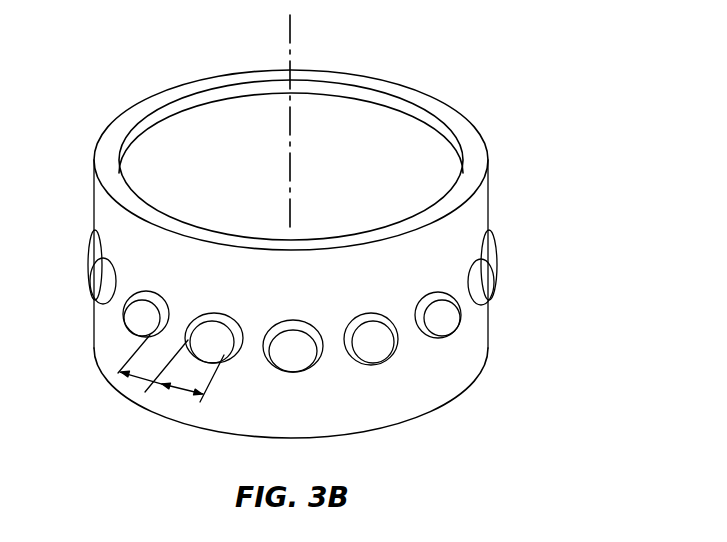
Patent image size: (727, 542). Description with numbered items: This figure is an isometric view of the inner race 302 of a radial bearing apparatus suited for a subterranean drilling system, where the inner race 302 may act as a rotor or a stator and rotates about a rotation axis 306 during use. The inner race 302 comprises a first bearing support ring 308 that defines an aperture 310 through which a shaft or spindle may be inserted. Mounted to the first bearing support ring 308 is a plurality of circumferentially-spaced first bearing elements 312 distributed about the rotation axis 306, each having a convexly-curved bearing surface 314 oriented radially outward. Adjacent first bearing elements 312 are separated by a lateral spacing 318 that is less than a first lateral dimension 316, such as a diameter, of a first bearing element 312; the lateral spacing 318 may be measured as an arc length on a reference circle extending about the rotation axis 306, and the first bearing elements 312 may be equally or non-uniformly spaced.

The inner race 302 is at (553, 90).
The rotation axis 306 is at (292, 40).
The first bearing support ring 308 is at (477, 147).
The aperture 310 is at (172, 160).
The first bearing elements 312 is at (427, 297).
The convexly-curved bearing surface 314 is at (380, 345).
The first lateral dimension 316 is at (166, 392).
The lateral spacing 318 is at (118, 373).